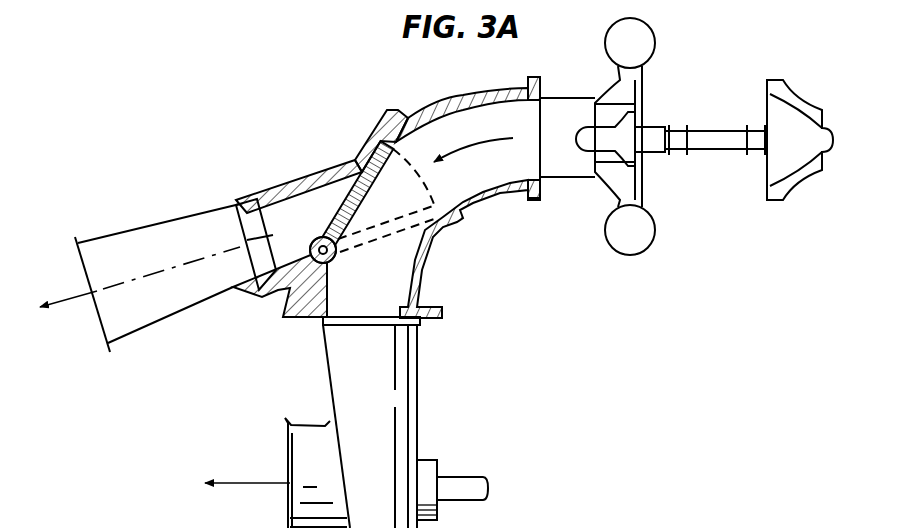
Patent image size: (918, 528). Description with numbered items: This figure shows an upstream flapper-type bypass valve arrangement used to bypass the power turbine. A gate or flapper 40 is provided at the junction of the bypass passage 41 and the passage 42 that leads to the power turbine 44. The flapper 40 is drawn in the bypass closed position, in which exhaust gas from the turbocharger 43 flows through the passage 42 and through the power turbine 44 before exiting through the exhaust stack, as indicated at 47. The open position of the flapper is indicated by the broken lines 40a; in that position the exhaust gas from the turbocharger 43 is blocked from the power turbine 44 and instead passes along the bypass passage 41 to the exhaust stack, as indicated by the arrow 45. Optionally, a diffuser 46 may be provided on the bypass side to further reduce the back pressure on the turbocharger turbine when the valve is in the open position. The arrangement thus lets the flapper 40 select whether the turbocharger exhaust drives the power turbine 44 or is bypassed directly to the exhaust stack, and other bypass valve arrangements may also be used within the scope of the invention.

The gate or flapper 40 is at (334, 204).
The broken lines indicating open position 40a is at (423, 251).
The bypass passage 41 is at (280, 212).
The passage to the power turbine 42 is at (417, 326).
The turbocharger 43 is at (717, 79).
The power turbine 44 is at (450, 453).
The arrow indicating exhaust flow to exhaust stack 45 is at (78, 294).
The diffuser 46 is at (190, 237).
The exhaust flow through the power turbine 47 is at (250, 486).